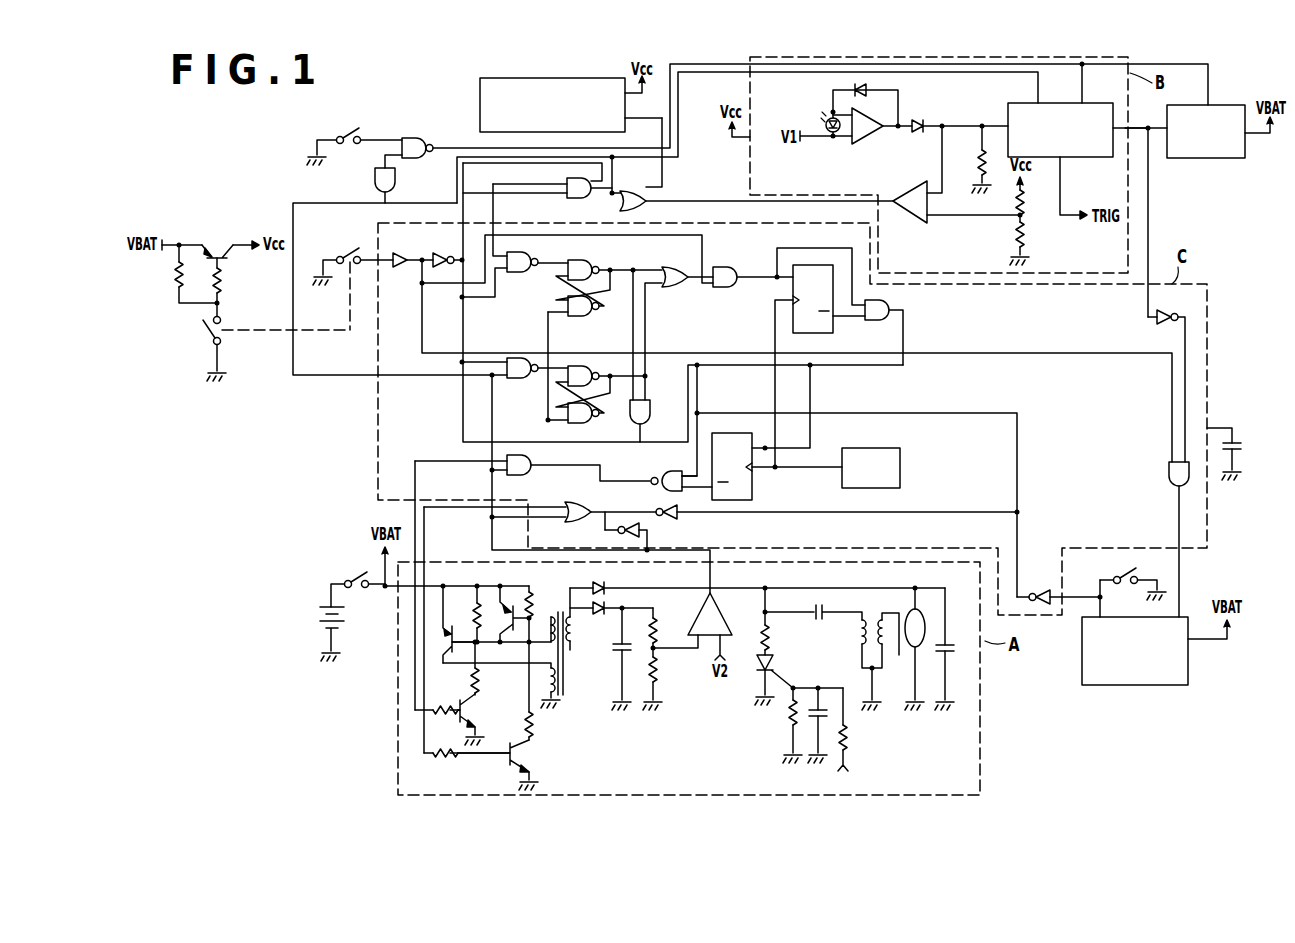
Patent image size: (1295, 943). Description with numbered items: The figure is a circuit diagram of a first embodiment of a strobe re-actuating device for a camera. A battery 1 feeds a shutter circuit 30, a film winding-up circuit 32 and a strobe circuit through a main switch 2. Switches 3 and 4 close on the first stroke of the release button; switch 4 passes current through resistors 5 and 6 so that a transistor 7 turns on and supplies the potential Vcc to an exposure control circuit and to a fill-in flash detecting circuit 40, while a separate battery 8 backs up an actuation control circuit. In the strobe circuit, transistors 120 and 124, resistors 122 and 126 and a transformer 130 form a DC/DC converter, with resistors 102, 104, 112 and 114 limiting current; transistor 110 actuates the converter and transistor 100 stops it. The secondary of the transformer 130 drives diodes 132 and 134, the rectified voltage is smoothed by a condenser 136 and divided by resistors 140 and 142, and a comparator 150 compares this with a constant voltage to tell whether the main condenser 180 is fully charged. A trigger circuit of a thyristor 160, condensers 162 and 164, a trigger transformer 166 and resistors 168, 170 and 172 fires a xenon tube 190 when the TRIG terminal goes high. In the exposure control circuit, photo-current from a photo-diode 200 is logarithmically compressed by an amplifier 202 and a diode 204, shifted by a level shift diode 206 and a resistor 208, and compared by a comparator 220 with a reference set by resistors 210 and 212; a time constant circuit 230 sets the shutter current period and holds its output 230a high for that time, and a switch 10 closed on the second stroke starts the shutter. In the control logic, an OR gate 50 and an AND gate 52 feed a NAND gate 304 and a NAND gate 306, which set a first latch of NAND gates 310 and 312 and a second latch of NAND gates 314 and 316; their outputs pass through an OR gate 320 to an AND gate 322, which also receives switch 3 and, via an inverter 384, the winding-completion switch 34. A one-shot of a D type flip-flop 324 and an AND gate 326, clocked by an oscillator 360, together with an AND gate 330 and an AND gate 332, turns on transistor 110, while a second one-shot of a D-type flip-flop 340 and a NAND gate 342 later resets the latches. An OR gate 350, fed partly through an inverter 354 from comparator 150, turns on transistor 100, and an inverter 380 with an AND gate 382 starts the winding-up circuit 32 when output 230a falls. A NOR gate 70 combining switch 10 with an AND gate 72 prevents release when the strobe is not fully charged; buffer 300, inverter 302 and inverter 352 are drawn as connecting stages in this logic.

The battery 1 is at (346, 620).
The main switch 2 is at (361, 578).
The switch 3 is at (350, 256).
The switch 4 is at (203, 334).
The resistor 5 is at (224, 283).
The resistor 6 is at (184, 281).
The transistor 7 is at (220, 254).
The battery 8 is at (1228, 453).
The switch 10 is at (348, 150).
The shutter circuit 30 is at (1222, 105).
The film winding-up circuit 32 is at (1082, 653).
The switch 34 is at (1137, 574).
The fill-in flash detecting circuit 40 is at (480, 104).
The OR gate 50 is at (633, 190).
The AND gate 52 is at (566, 181).
The NOR gate 70 is at (417, 138).
The AND gate 72 is at (397, 183).
The transistor 100 is at (527, 754).
The resistor 102 is at (446, 762).
The resistor 104 is at (533, 724).
The transistor 110 is at (474, 713).
The resistor 112 is at (442, 716).
The resistor 114 is at (480, 683).
The transistor 120 is at (448, 655).
The resistor 122 is at (474, 616).
The transistor 124 is at (508, 606).
The resistor 126 is at (536, 600).
The transformer 130 is at (556, 688).
The diode 132 is at (606, 588).
The diode 134 is at (603, 616).
The condenser 136 is at (618, 650).
The resistor 140 is at (658, 626).
The resistor 142 is at (659, 672).
The comparator 150 is at (730, 626).
The thyristor 160 is at (775, 664).
The condenser 162 is at (825, 622).
The condenser 164 is at (812, 736).
The trigger transformer 166 is at (885, 660).
The resistor 168 is at (770, 638).
The resistor 170 is at (788, 712).
The resistor 172 is at (850, 740).
The main condenser 180 is at (955, 652).
The xenon tube 190 is at (920, 610).
The photo-diode 200 is at (828, 121).
The amplifier 202 is at (870, 144).
The diode 204 is at (852, 88).
The level shift diode 206 is at (918, 120).
The resistor 208 is at (977, 162).
The resistor 210 is at (1013, 203).
The resistor 212 is at (1027, 238).
The comparator 220 is at (917, 189).
The time constant circuit 230 is at (1090, 103).
The output 230a is at (1146, 124).
The buffer 300 is at (396, 268).
The inverter 302 is at (440, 252).
The NAND gate 304 is at (514, 273).
The NAND gate 306 is at (514, 379).
The NAND gate 310 is at (594, 262).
The NAND gate 312 is at (588, 318).
The NAND gate 314 is at (593, 370).
The NAND gate 316 is at (585, 425).
The OR gate 320 is at (668, 267).
The AND gate 322 is at (728, 267).
The D type flip-flop 324 is at (828, 334).
The AND gate 326 is at (889, 301).
The AND gate 330 is at (652, 408).
The AND gate 332 is at (527, 476).
The D-type flip-flop 340 is at (752, 488).
The NAND gate 342 is at (672, 471).
The OR gate 350 is at (571, 522).
The inverter 352 is at (661, 505).
The inverter 354 is at (642, 528).
The oscillator 360 is at (880, 448).
The inverter 380 is at (1168, 310).
The AND gate 382 is at (1169, 474).
The inverter 384 is at (1043, 590).